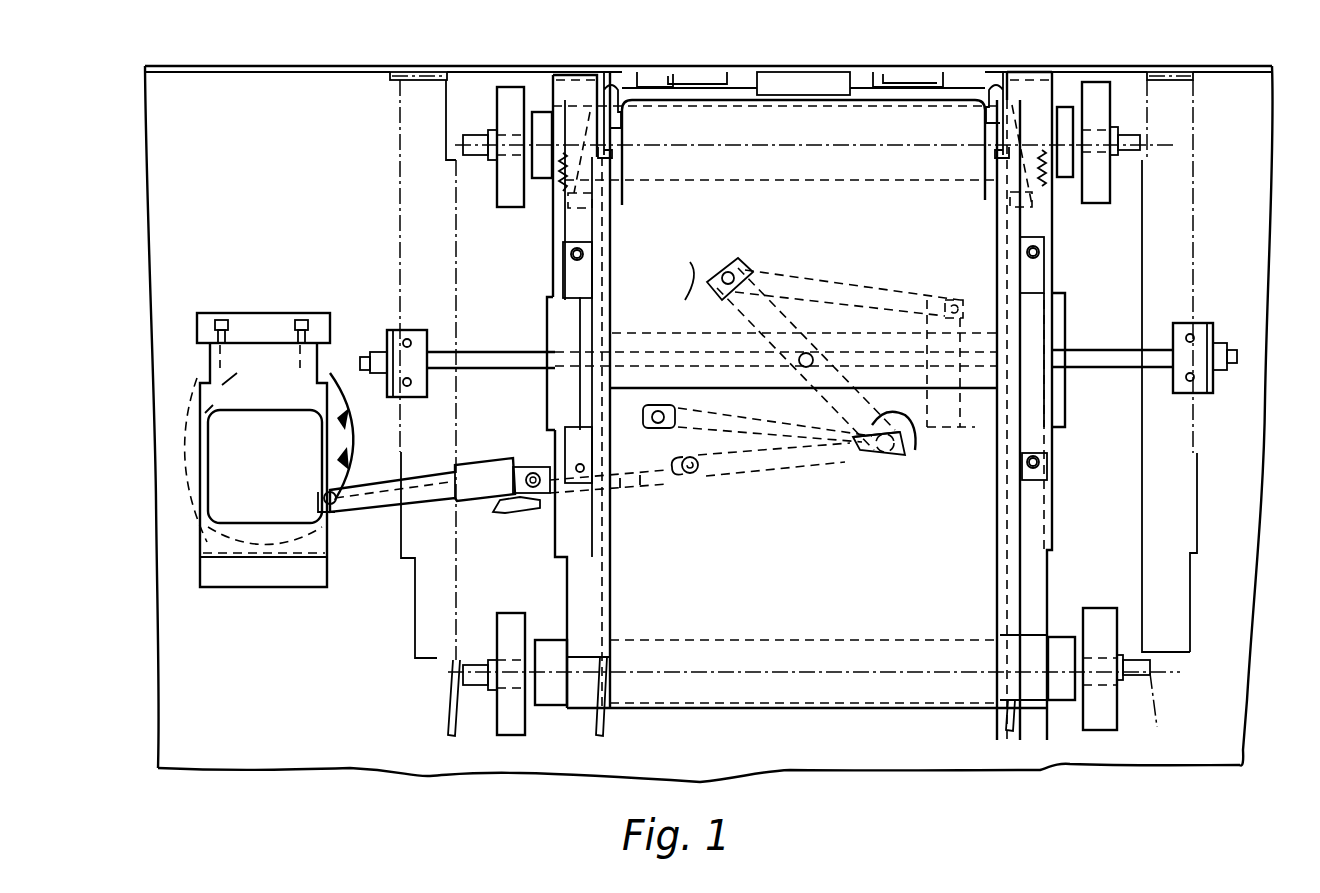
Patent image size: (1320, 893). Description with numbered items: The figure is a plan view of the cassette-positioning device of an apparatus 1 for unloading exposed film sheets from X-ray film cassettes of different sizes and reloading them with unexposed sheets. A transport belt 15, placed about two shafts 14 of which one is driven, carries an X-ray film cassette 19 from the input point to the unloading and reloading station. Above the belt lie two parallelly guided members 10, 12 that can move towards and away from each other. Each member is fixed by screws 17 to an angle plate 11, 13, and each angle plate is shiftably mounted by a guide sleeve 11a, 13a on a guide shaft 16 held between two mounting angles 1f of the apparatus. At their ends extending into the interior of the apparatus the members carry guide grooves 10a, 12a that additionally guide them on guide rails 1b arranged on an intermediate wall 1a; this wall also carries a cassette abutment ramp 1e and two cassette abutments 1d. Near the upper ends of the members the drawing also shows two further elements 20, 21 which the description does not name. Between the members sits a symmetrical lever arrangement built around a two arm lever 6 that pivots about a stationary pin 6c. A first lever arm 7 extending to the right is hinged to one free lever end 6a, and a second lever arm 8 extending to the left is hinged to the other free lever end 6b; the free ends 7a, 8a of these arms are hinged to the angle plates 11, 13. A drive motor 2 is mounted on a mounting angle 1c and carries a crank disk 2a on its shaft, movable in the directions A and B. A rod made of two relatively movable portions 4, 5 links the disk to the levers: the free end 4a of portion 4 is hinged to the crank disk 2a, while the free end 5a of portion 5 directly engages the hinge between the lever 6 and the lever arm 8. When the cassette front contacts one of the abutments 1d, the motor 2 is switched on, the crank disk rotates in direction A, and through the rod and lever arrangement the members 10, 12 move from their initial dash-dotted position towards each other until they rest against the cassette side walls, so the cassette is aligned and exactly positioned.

The apparatus 1 is at (175, 178).
The intermediate wall 1a is at (240, 66).
The guide rails 1b is at (475, 72).
The mounting angle 1c is at (275, 355).
The cassette abutments 1d is at (688, 78).
The cassette abutment ramp 1e is at (782, 85).
The mounting angles 1f is at (418, 330).
The drive motor 2 is at (230, 497).
The crank disk 2a is at (195, 435).
The rod portion 4 is at (385, 497).
The free end of rod portion 4a is at (340, 504).
The rod portion 5 is at (700, 500).
The free end of rod portion 5a is at (855, 458).
The two arm lever 6 is at (762, 290).
The free lever end 6a is at (745, 310).
The free lever end 6b is at (895, 440).
The stationary pin 6c is at (815, 335).
The first lever arm 7 is at (870, 300).
The free end of first lever arm 7a is at (935, 295).
The second lever arm 8 is at (750, 450).
The free end of second lever arm 8a is at (662, 390).
The member 10 is at (1040, 575).
The guide groove 10a is at (1020, 75).
The angle plate 11 is at (1058, 325).
The guide sleeve 11a is at (960, 338).
The member 12 is at (560, 590).
The guide groove 12a is at (565, 72).
The angle plate 13 is at (545, 325).
The guide sleeve 13a is at (695, 275).
The shafts 14 is at (1062, 118).
The transport belt 15 is at (930, 620).
The guide shaft 16 is at (1238, 355).
The screws 17 is at (568, 255).
The X-ray film cassette 19 is at (1000, 283).
The right latch 20 is at (995, 110).
The left latch 21 is at (618, 95).